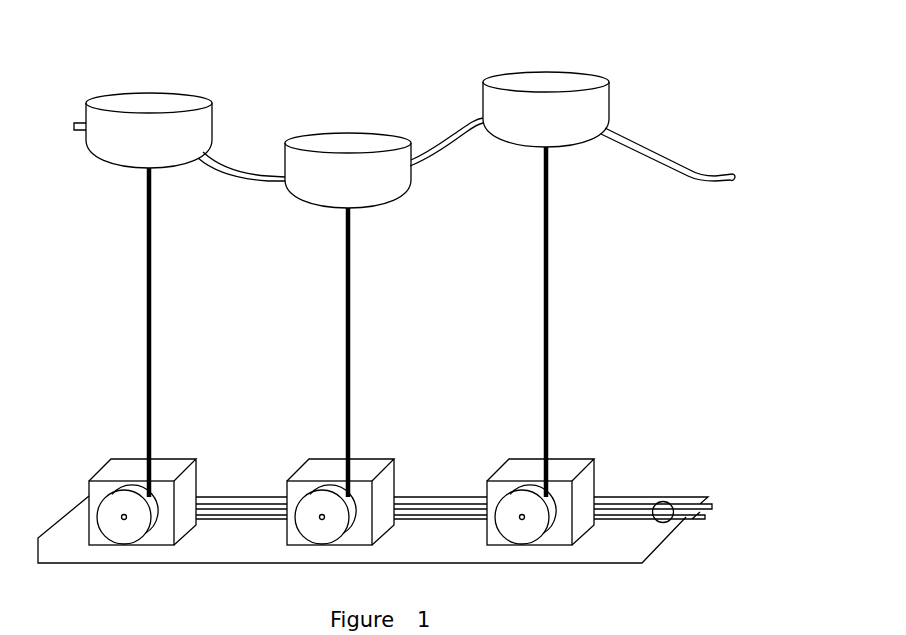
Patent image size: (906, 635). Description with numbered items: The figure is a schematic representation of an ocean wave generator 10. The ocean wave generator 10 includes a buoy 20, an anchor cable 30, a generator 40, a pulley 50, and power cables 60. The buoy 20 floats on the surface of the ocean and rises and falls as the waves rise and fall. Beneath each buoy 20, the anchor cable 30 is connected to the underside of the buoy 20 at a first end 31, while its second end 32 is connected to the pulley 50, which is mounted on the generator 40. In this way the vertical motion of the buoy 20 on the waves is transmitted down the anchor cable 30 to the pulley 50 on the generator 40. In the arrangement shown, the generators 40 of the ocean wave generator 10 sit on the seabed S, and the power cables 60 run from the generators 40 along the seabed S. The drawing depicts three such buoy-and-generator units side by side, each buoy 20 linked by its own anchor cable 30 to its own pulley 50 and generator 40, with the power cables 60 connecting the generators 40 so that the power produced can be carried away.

The ocean wave generator 10 is at (690, 130).
The buoy 20 is at (547, 72).
The anchor cable 30 is at (576, 322).
The first end 31 is at (549, 158).
The second end 32 is at (553, 461).
The generator 40 is at (559, 530).
The pulley 50 is at (530, 528).
The power cables 60 is at (666, 502).
The seabed s is at (644, 542).